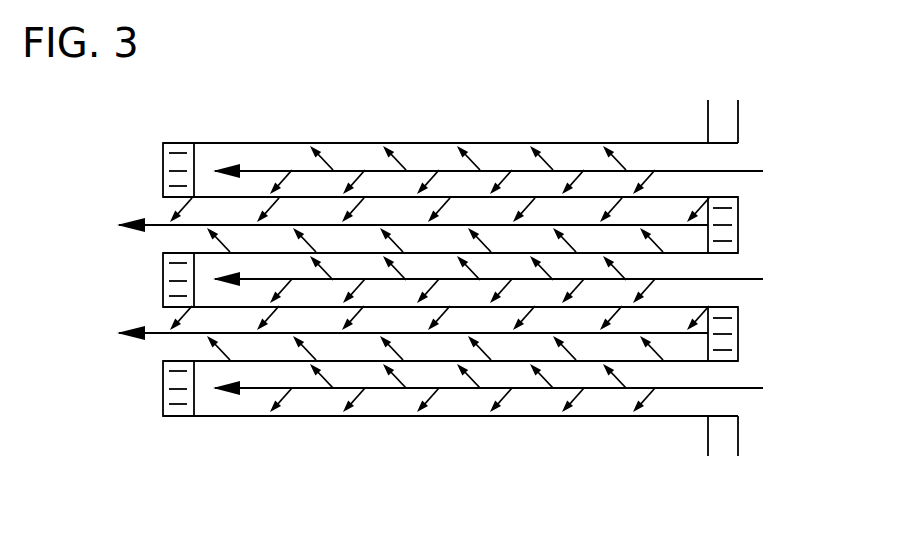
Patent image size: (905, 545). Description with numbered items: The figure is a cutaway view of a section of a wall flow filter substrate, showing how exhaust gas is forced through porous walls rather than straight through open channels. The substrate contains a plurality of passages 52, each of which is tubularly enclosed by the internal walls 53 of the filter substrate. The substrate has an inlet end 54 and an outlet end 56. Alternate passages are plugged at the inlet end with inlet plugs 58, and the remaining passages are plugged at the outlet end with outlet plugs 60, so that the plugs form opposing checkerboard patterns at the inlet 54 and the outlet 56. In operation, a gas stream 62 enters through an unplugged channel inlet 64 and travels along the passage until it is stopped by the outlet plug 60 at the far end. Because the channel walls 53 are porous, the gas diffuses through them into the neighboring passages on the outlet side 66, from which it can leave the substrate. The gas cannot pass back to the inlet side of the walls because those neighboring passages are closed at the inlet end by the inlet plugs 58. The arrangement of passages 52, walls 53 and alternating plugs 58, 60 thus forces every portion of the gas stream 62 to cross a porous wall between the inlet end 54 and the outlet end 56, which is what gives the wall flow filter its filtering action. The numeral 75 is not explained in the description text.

The passages 52 is at (607, 182).
The internal walls 53 is at (368, 253).
The inlet end 54 is at (700, 467).
The outlet end 56 is at (130, 430).
The inlet plugs 58 is at (728, 118).
The outlet plugs 60 is at (172, 171).
The gas stream 62 is at (452, 169).
The unplugged channel inlet 64 is at (727, 180).
The outlet side 66 is at (162, 207).
The top wall 75 is at (347, 142).